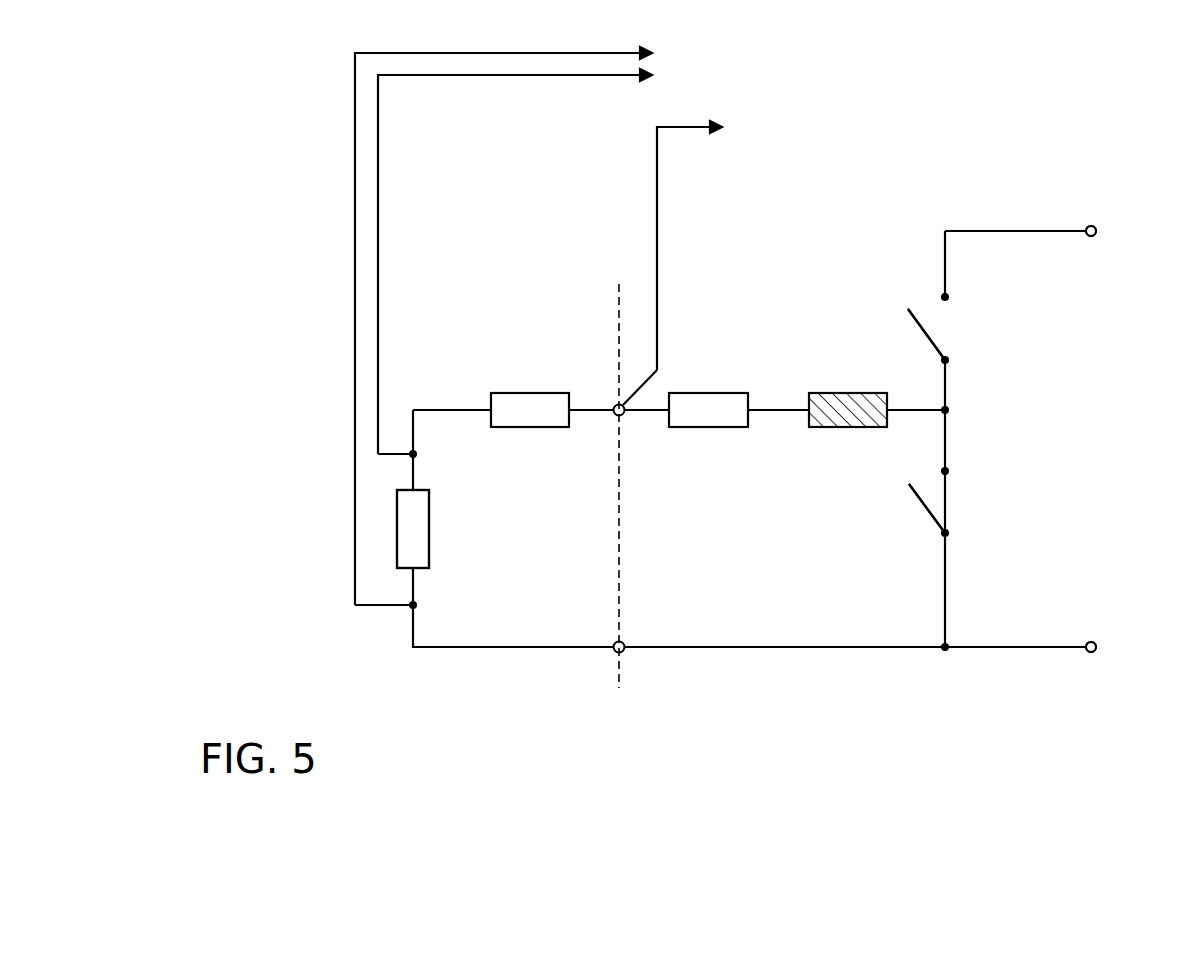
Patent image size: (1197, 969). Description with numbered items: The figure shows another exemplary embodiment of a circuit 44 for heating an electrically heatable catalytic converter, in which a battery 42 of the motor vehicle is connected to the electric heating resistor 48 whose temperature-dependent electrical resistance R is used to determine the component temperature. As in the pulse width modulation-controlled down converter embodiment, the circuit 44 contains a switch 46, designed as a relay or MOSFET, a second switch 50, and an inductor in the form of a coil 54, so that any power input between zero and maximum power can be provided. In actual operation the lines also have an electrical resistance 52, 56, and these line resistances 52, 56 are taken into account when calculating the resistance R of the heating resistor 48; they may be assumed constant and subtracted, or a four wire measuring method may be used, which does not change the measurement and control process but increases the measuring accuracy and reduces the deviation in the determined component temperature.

The line resistance 52 is at (525, 408).
The line resistance 56 is at (709, 393).
The coil 54 is at (848, 393).
The switch 46 is at (930, 338).
The second switch 50 is at (925, 508).
The battery 42 is at (1097, 233).
The heating resistor 48 is at (409, 555).
The circuit 44 is at (773, 647).